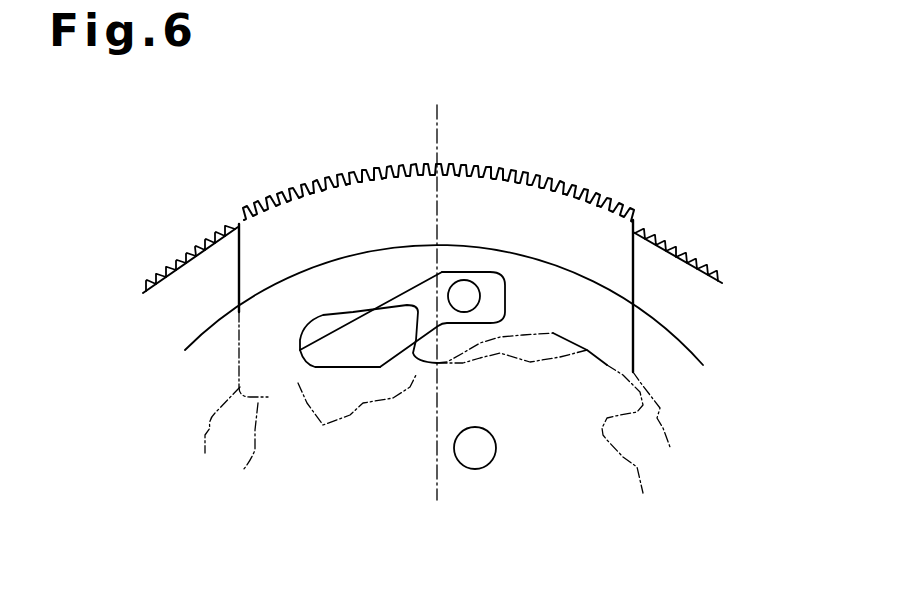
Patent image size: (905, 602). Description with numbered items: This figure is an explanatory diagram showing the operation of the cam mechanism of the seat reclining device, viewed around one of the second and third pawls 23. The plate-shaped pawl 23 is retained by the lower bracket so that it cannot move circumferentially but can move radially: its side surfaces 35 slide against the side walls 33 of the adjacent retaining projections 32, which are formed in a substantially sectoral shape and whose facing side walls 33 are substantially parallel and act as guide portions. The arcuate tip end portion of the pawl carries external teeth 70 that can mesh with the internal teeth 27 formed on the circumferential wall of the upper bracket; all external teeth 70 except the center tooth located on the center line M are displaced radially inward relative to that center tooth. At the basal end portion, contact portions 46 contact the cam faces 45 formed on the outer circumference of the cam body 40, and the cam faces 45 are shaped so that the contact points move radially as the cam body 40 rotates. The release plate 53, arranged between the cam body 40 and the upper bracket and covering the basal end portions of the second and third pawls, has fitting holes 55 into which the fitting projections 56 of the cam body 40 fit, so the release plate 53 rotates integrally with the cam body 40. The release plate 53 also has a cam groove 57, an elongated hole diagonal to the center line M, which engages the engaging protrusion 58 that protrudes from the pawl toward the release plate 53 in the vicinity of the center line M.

The center line M is at (436, 113).
The pawl 23 is at (583, 201).
The internal teeth 27 is at (537, 180).
The external teeth 70 is at (434, 164).
The side wall 33 is at (239, 296).
The side surface 35 is at (240, 243).
The release plate 53 is at (386, 236).
The cam groove 57 is at (410, 297).
The engaging protrusion 58 is at (482, 297).
The contact portion 46 is at (268, 398).
The cam face 45 is at (262, 408).
The retaining projection 32 is at (440, 395).
The cam body 40 is at (631, 444).
The fitting projection 56 is at (495, 447).
The fitting hole 55 is at (478, 466).